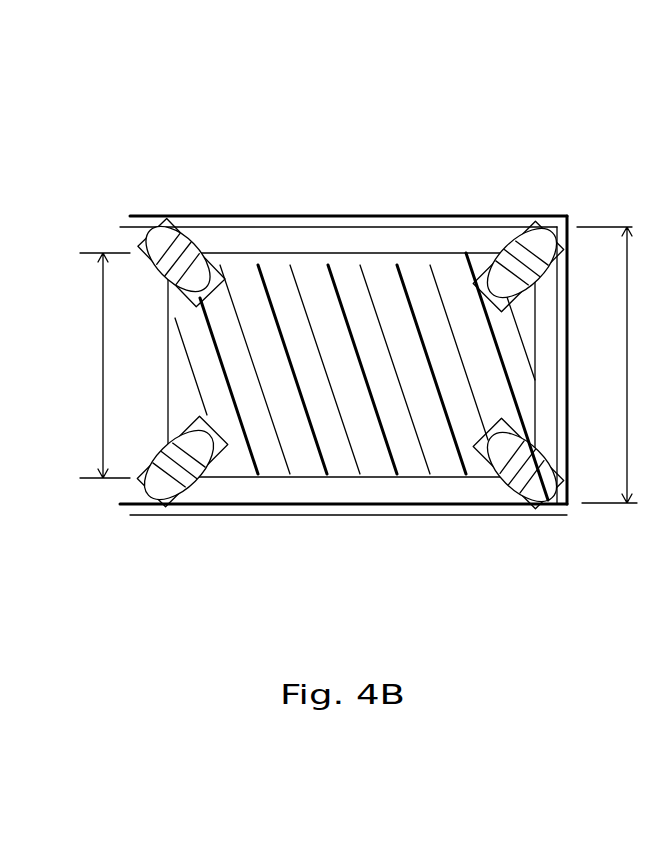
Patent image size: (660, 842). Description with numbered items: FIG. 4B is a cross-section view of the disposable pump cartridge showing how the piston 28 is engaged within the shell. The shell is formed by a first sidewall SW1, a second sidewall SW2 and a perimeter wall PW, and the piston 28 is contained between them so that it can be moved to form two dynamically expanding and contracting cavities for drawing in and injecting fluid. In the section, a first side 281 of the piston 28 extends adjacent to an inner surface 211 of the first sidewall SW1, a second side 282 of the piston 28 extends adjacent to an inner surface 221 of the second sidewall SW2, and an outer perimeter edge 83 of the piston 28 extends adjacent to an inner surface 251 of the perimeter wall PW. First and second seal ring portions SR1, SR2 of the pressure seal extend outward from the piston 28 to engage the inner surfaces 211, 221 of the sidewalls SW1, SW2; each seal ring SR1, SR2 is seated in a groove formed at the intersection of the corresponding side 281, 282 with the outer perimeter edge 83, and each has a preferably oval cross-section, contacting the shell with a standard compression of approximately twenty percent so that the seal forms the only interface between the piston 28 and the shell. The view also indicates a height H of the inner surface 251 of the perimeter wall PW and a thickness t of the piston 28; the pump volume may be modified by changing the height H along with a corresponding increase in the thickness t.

The piston 28 is at (235, 278).
The inner surface of second sidewall 221 is at (353, 228).
The second side of piston 282 is at (423, 252).
The second sidewall SW2 is at (343, 177).
The second seal ring portion SR2 is at (158, 238).
The perimeter wall PW is at (591, 324).
The outer perimeter edge of piston 83 is at (168, 370).
The inner surface of perimeter wall 251 is at (573, 383).
The inner surface of first sidewall 211 is at (370, 504).
The first sidewall SW1 is at (343, 544).
The first side of piston 281 is at (442, 480).
The first seal ring portion SR1 is at (160, 490).
The thickness of piston t is at (105, 365).
The height of inner surface of perimeter wall H is at (608, 365).